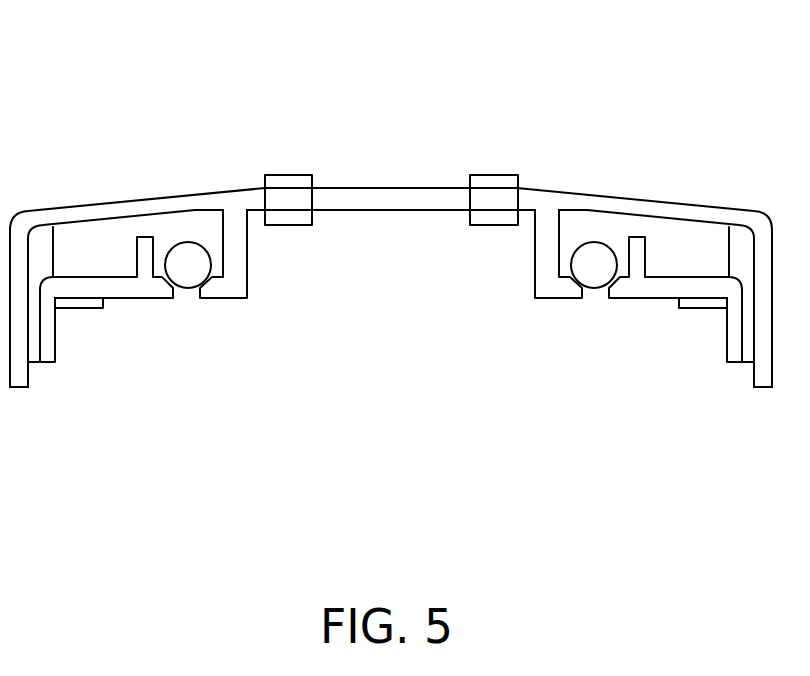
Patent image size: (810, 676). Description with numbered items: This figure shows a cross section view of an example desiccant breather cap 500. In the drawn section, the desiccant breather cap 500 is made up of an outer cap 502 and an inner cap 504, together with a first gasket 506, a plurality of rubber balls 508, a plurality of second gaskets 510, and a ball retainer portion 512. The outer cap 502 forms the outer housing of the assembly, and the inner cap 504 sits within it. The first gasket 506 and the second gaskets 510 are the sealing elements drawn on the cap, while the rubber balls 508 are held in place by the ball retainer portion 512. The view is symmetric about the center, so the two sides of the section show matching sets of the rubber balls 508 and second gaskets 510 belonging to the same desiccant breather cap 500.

The desiccant breather cap 500 is at (91, 51).
The outer cap 502 is at (610, 178).
The inner cap 504 is at (630, 310).
The first gasket 506 is at (688, 322).
The rubber balls 508 is at (608, 235).
The second gaskets 510 is at (483, 162).
The ball retainer portion 512 is at (513, 282).